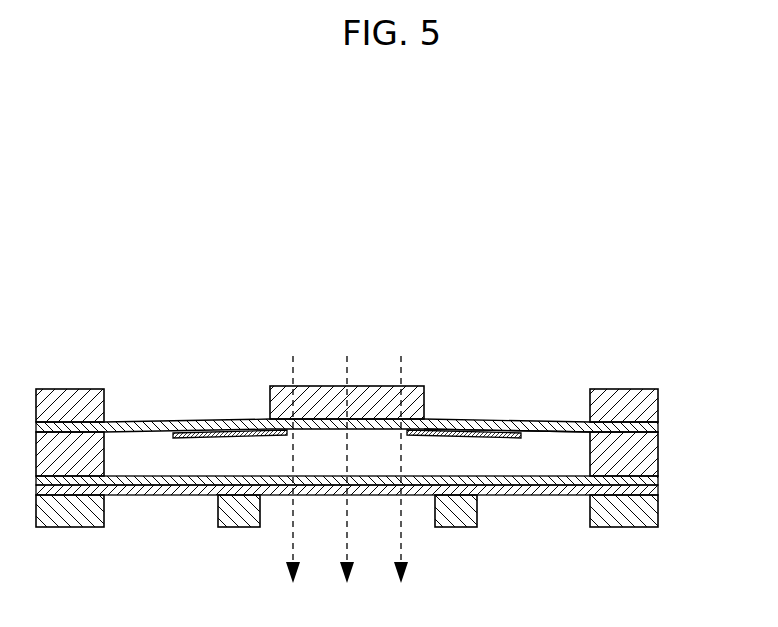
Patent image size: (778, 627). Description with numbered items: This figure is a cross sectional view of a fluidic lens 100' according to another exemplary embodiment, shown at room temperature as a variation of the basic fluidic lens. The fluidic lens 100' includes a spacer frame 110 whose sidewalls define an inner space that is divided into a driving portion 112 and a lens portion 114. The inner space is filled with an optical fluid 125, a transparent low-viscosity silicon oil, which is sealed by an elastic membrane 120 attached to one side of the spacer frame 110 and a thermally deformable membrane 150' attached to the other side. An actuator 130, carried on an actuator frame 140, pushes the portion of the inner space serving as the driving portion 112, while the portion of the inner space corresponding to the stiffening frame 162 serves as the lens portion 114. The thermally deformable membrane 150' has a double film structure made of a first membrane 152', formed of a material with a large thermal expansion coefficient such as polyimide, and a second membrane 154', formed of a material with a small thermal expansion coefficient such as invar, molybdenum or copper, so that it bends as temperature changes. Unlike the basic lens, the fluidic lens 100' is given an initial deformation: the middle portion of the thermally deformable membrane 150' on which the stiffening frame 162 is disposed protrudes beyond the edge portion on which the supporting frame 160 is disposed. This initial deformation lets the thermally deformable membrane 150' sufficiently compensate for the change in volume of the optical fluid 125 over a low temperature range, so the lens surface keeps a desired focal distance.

The fluidic lens 100' is at (390, 414).
The spacer frame 110 is at (650, 455).
The driving portion 112 is at (195, 469).
The lens portion 114 is at (342, 469).
The elastic membrane 120 is at (652, 478).
The optical fluid 125 is at (571, 460).
The actuator 130 is at (652, 490).
The actuator frame 140 is at (650, 515).
The thermally deformable membrane 150' is at (381, 361).
The first membrane 152' is at (507, 376).
The second membrane 154' is at (347, 379).
The supporting frame 160 is at (623, 400).
The stiffening frame 162 is at (282, 395).